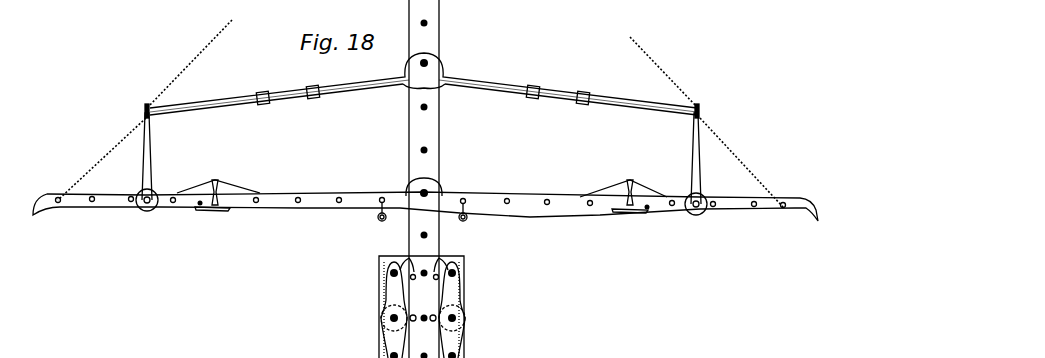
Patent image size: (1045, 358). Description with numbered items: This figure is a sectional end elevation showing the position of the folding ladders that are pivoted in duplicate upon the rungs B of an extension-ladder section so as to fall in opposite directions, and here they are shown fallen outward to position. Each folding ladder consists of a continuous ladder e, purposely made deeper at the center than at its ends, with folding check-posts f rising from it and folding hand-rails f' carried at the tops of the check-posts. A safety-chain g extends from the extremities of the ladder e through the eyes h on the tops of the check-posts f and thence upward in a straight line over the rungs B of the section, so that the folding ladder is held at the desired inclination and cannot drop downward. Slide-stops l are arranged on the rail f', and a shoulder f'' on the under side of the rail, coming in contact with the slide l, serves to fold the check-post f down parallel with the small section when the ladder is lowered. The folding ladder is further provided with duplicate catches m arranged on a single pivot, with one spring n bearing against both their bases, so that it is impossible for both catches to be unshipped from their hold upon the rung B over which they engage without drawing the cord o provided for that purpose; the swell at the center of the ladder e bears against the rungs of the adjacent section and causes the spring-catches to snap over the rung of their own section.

The rung B is at (422, 179).
The continuous ladder e is at (425, 202).
The folding check-post f is at (427, 158).
The folding hand-rail f' is at (423, 102).
The shoulder f'' is at (423, 84).
The safety-chain g is at (420, 113).
The eye h is at (706, 107).
The slide-stop l is at (422, 96).
The catch m is at (421, 184).
The spring n is at (206, 210).
The cord o is at (422, 186).